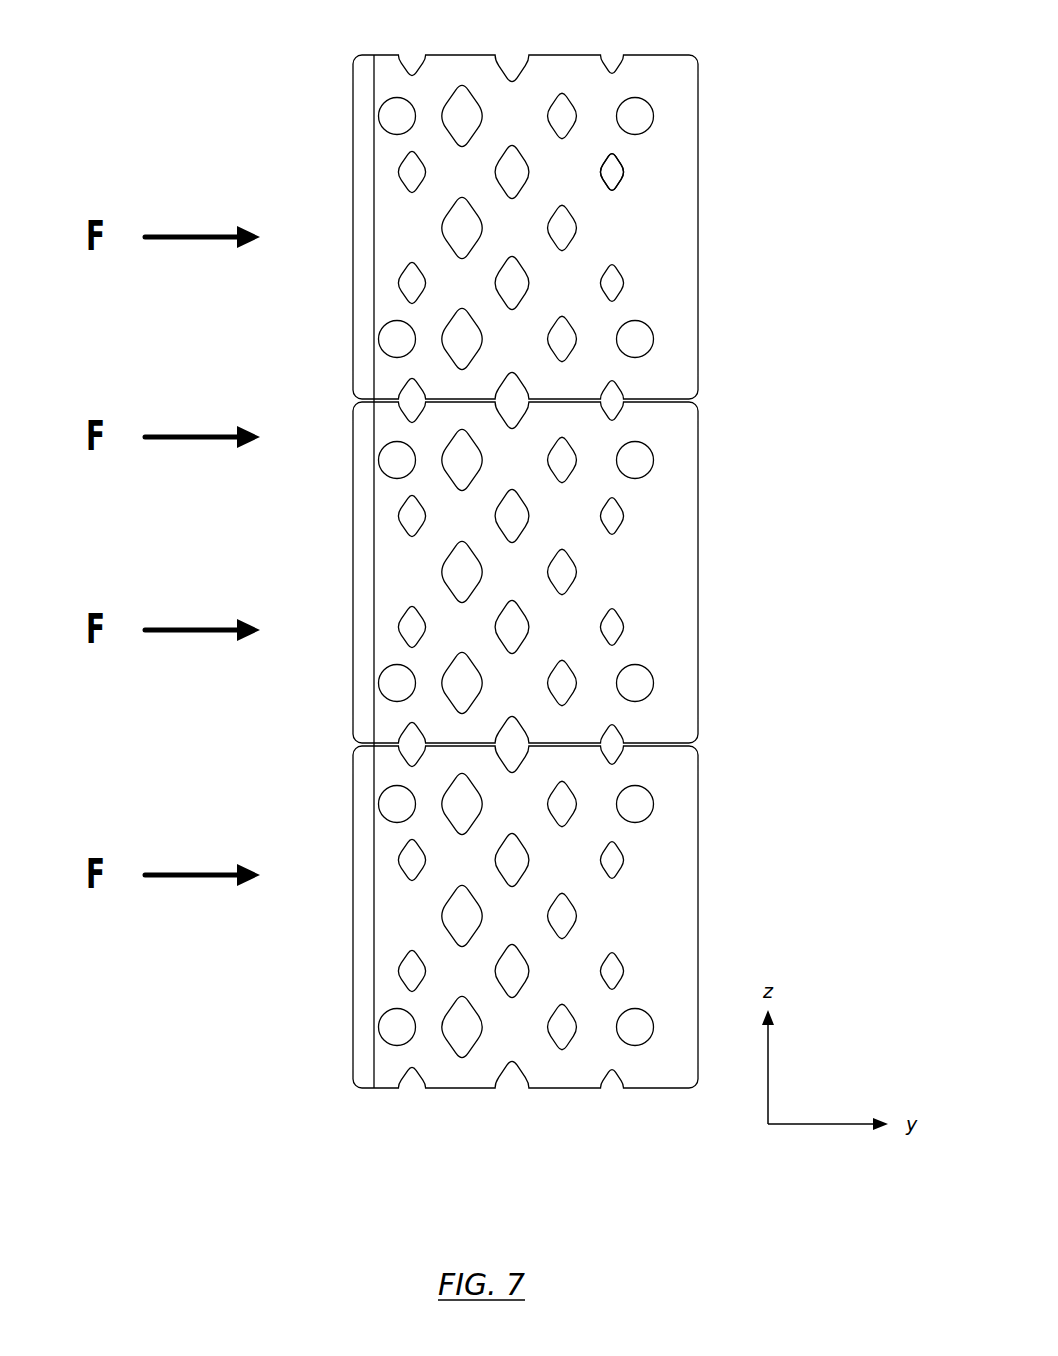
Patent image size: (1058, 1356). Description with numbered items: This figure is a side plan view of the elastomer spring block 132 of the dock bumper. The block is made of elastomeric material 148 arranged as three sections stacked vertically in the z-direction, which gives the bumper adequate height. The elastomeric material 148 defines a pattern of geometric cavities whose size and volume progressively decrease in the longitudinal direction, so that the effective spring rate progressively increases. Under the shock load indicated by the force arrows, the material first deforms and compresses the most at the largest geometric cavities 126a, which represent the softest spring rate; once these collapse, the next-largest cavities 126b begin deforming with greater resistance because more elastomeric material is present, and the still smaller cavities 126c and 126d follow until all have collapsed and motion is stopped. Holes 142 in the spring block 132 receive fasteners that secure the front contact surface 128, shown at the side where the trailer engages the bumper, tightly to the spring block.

The elastomer spring block 132 is at (124, 109).
The largest geometric cavities 126a is at (462, 81).
The next-largest geometric cavities 126b is at (510, 143).
The geometric cavities 126c is at (565, 90).
The geometric cavities 126d is at (622, 165).
The elastomeric material 148 is at (668, 230).
The holes 142 is at (390, 341).
The front contact surface 128 is at (353, 540).